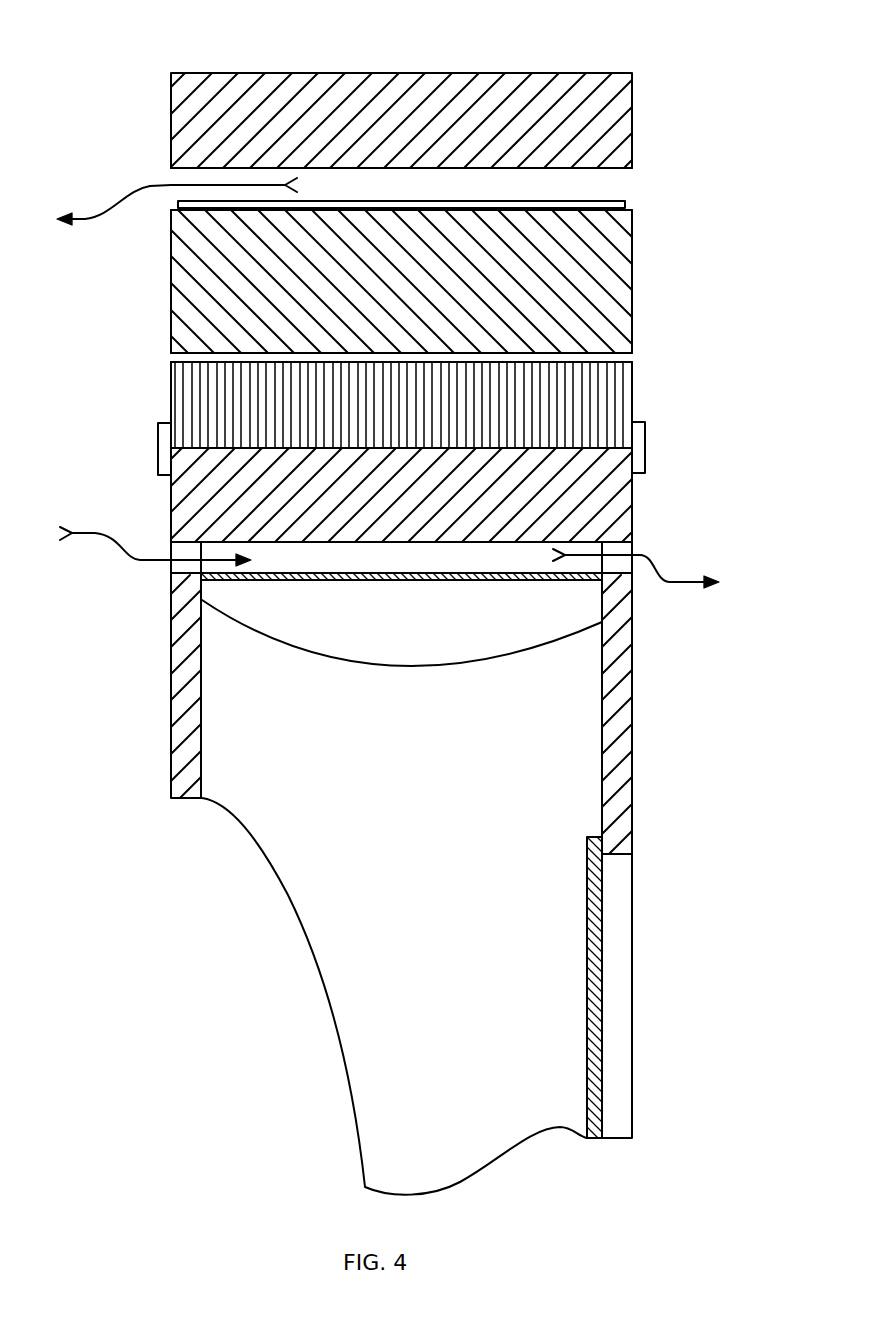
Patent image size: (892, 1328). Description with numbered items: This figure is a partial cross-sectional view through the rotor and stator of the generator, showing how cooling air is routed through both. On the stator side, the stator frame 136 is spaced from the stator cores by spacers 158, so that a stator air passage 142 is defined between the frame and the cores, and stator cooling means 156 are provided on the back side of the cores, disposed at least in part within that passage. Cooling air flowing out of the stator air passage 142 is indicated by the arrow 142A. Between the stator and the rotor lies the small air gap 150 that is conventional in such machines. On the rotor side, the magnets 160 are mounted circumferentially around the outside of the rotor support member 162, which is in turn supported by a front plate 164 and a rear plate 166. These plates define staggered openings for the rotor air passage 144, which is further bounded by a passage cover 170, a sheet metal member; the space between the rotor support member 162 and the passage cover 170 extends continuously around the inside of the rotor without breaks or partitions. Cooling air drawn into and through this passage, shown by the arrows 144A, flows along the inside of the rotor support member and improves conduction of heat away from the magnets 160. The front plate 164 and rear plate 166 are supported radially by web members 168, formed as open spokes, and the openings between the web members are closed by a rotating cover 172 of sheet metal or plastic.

The stator frame 136 is at (335, 73).
The stator air passage 142 is at (615, 183).
The cooling air flow from stator air passage 142A is at (148, 183).
The spacers 158 is at (633, 197).
The stator cooling means 156 is at (240, 207).
The air gap 150 is at (158, 358).
The magnets 160 is at (633, 377).
The rotor support member 162 is at (633, 503).
The rotor air passage 144 is at (365, 558).
The cooling air flow into rotor air passage 144A is at (140, 560).
The passage cover 170 is at (425, 580).
The front plate 164 is at (171, 712).
The rear plate 166 is at (617, 745).
The web members 168 is at (416, 768).
The rotating cover 172 is at (594, 935).